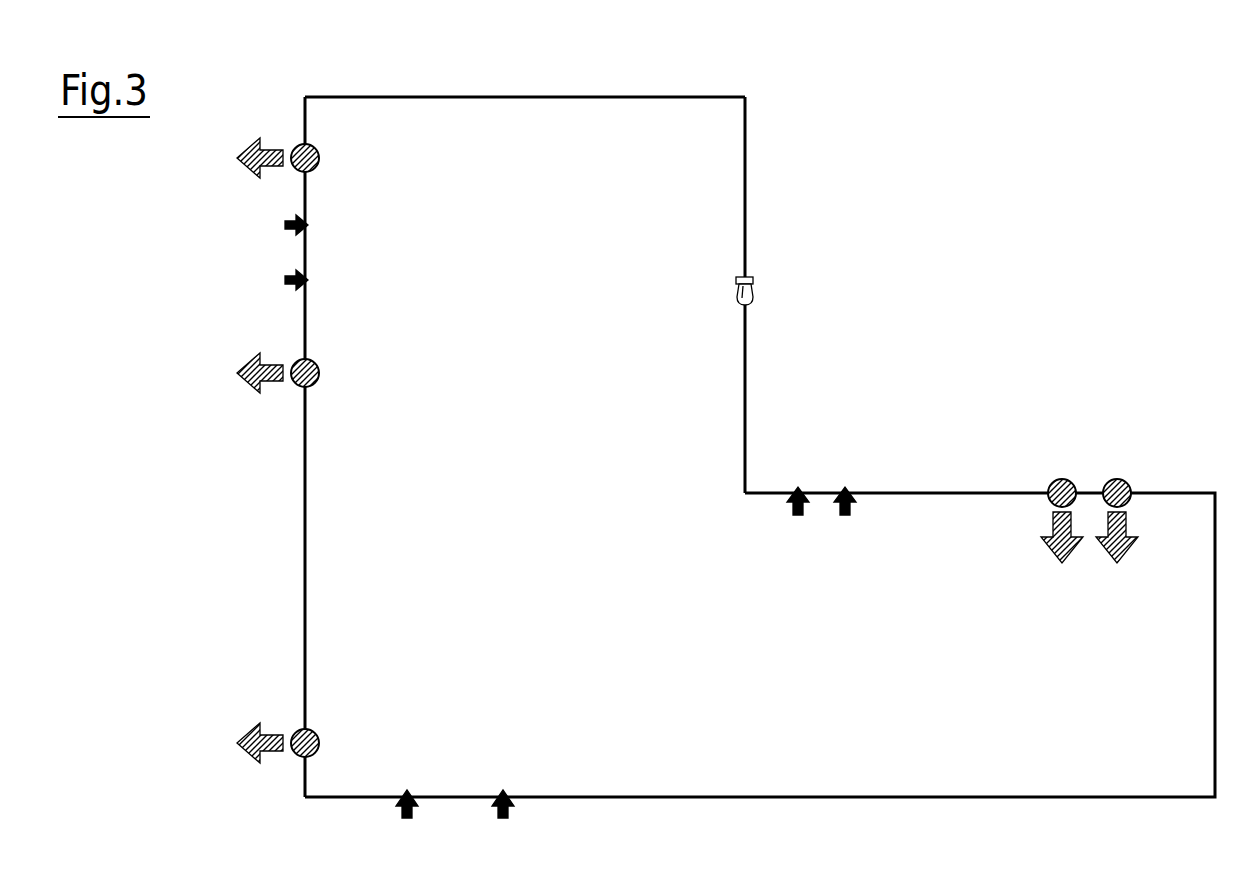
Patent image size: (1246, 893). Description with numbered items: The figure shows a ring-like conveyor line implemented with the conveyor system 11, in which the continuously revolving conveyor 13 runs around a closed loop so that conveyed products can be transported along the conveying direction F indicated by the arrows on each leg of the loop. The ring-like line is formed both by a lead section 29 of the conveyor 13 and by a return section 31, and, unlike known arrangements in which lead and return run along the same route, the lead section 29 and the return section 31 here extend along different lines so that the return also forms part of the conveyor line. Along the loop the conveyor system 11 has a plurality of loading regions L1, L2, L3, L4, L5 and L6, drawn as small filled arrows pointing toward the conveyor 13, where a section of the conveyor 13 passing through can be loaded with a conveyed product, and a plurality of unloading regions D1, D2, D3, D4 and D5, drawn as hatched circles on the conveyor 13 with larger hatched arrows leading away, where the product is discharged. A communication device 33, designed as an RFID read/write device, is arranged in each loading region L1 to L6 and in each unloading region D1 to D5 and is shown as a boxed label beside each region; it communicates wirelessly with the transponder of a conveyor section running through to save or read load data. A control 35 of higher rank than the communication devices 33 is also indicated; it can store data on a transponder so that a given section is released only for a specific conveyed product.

The conveyor system 11 is at (931, 210).
The conveyor 13 is at (792, 295).
The lead section 29 is at (467, 110).
The return section 31 is at (1185, 762).
The communication device 33 is at (701, 419).
The control 35 is at (842, 380).
The unloading region D1 is at (297, 743).
The unloading region D2 is at (296, 373).
The unloading region D3 is at (294, 162).
The unloading region D4 is at (1062, 504).
The unloading region D5 is at (1117, 504).
The loading region L1 is at (501, 790).
The loading region L2 is at (404, 790).
The loading region L3 is at (317, 285).
The loading region L4 is at (317, 227).
The loading region L5 is at (794, 486).
The loading region L6 is at (842, 486).
The conveying direction F is at (660, 77).